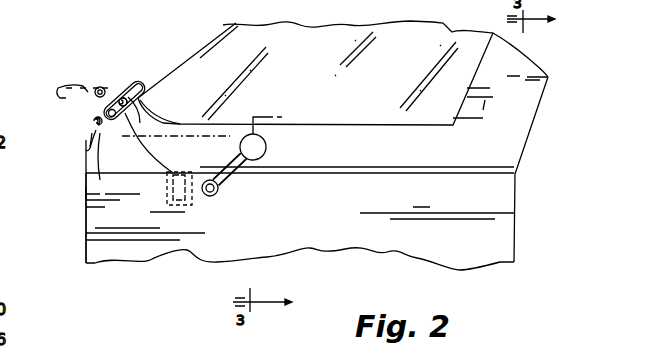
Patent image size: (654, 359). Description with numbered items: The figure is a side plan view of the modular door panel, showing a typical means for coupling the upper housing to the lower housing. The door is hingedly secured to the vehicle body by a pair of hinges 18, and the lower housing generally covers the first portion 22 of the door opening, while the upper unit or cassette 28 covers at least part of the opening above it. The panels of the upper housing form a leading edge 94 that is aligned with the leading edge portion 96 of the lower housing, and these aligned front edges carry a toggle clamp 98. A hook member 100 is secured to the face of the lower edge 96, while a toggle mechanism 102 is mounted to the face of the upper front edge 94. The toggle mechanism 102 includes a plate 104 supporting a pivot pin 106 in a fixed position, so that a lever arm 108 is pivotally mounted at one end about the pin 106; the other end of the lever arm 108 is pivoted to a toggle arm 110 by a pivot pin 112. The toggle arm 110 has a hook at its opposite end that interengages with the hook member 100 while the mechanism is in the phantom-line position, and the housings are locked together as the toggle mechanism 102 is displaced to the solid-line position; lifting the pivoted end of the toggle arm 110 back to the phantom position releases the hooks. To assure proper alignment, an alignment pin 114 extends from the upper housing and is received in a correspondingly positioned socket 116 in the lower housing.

The hinge 18 is at (118, 0).
The first portion of the door opening 22 is at (113, 168).
The upper unit or cassette 28 is at (10, 199).
The leading edge 94 is at (141, 98).
The leading edge portion 96 is at (120, 127).
The toggle clamp 98 is at (84, 124).
The hook member 100 is at (117, 120).
The toggle mechanism 102 is at (113, 97).
The plate 104 is at (150, 102).
The pivot pin 106 is at (83, 190).
The lever arm 108 is at (105, 106).
The toggle arm 110 is at (97, 137).
The pivot pin 112 is at (125, 92).
The alignment pin 114 is at (207, 162).
The socket 116 is at (192, 206).